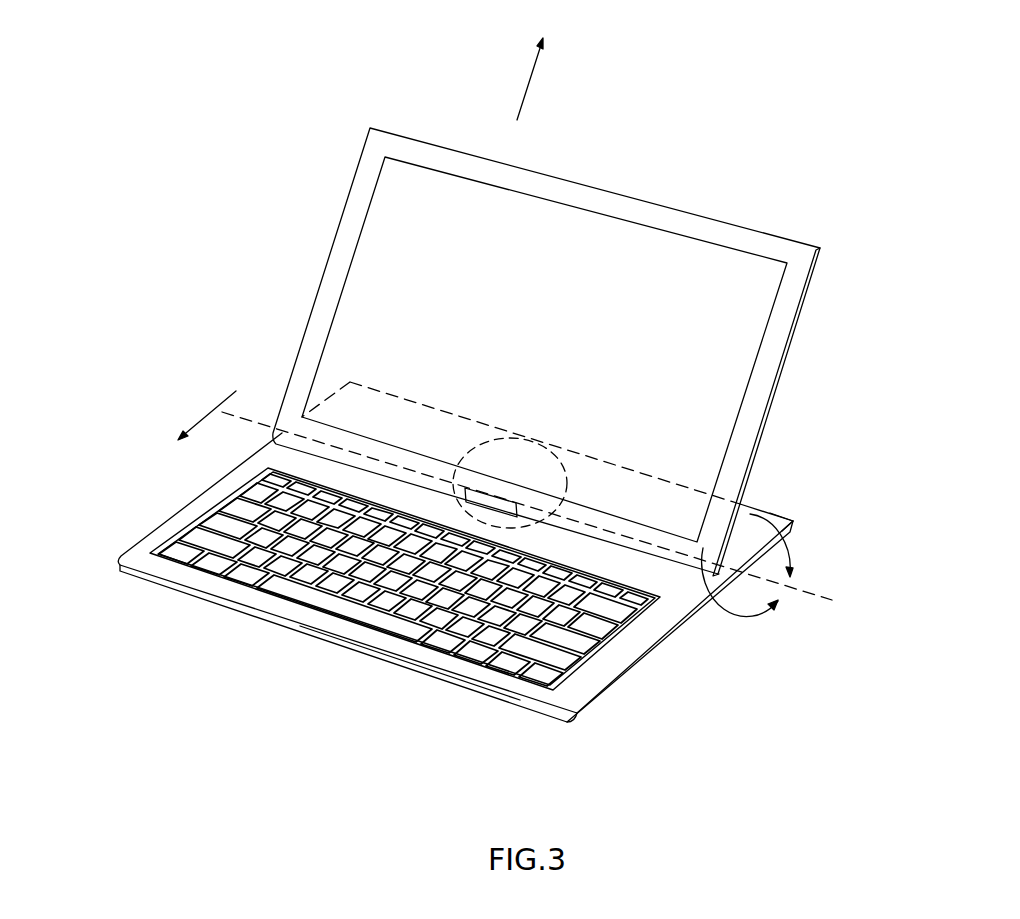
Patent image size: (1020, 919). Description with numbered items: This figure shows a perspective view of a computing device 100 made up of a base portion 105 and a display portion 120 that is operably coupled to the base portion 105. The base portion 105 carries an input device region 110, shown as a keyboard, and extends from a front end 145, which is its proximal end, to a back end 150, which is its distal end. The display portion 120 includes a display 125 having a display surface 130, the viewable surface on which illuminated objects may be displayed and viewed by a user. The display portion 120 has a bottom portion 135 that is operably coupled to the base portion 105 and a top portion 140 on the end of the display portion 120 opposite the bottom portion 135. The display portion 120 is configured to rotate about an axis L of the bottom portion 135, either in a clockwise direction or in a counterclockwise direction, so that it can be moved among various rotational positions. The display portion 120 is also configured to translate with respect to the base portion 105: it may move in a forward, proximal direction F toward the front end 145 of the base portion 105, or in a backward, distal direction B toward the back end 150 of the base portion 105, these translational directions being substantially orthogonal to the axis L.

The computing device 100 is at (157, 412).
The base portion 105 is at (273, 458).
The input device region 110 is at (283, 548).
The display portion 120 is at (347, 215).
The display 125 is at (431, 203).
The display surface 130 is at (679, 290).
The bottom portion 135 is at (723, 555).
The top portion 140 is at (826, 255).
The front end 145 is at (522, 712).
The back end 150 is at (810, 523).